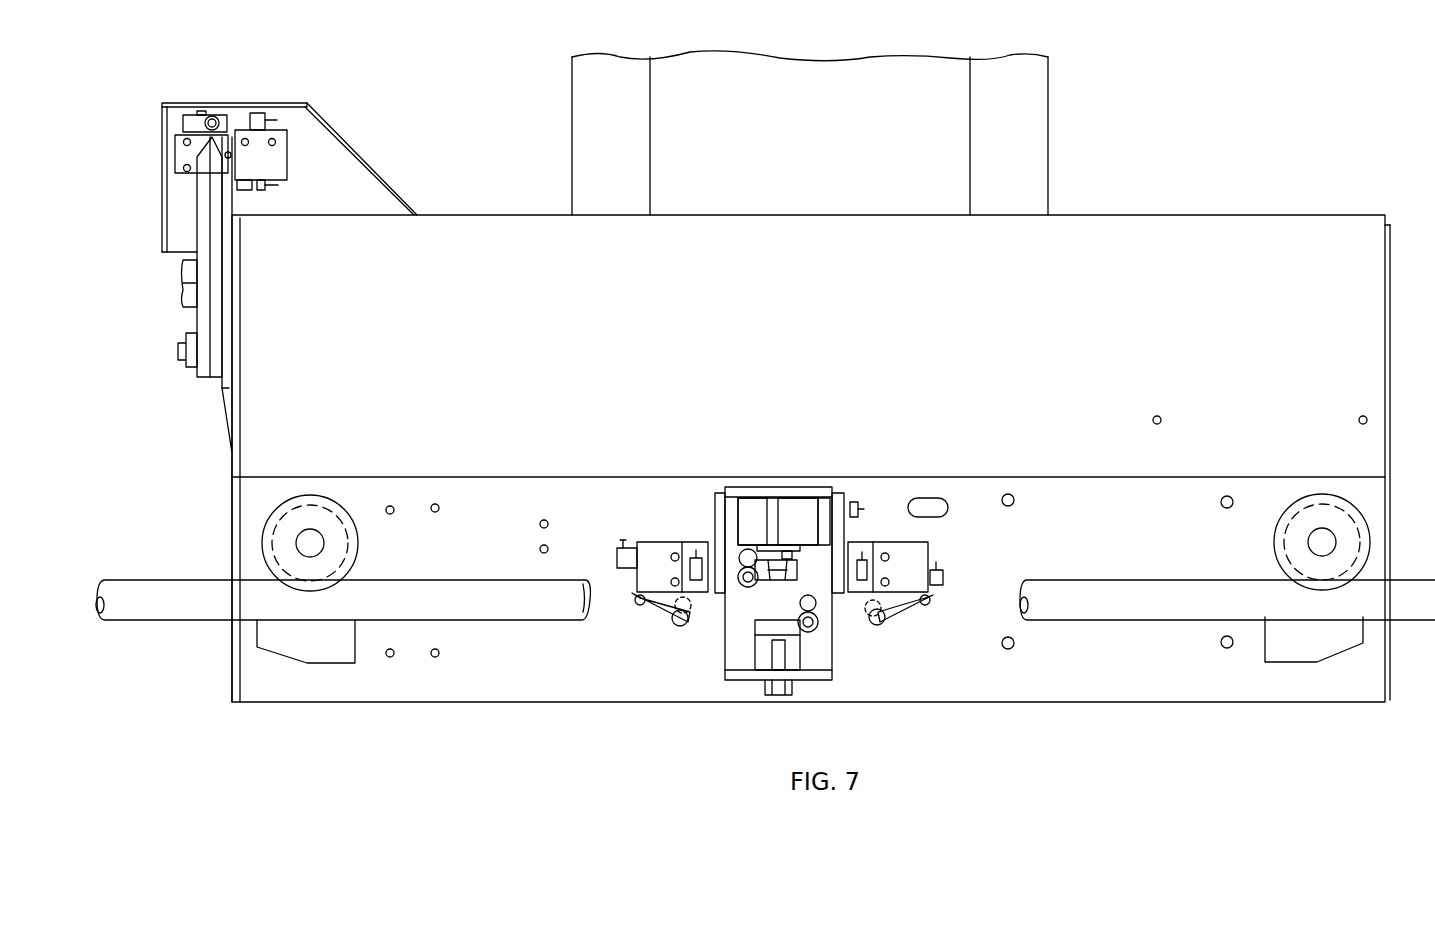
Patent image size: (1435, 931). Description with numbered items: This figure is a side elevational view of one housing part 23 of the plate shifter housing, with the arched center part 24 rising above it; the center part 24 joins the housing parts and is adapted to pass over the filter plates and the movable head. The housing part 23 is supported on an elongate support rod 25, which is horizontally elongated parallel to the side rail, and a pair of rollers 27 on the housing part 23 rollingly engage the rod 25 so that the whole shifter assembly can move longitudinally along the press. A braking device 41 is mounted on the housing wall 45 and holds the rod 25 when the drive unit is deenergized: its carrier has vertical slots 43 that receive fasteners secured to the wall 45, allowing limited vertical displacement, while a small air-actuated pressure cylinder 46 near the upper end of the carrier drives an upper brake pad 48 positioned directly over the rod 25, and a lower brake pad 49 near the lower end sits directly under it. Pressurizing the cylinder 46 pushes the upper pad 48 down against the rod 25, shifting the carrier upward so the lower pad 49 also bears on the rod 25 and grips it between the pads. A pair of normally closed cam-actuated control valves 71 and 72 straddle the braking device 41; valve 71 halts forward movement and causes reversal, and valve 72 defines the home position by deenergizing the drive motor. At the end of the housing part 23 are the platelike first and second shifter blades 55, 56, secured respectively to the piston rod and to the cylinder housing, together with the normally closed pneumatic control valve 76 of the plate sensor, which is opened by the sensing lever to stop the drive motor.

The housing part 23 is at (1288, 211).
The arched center part 24 is at (1008, 152).
The support rod 25 is at (1155, 613).
The roller 27 is at (335, 548).
The braking device 41 is at (790, 488).
The vertical slot 43 is at (747, 588).
The housing wall 45 is at (1135, 553).
The pressure cylinder 46 is at (750, 510).
The upper brake pad 48 is at (797, 573).
The lower brake pad 49 is at (767, 630).
The first shifter blade 55 is at (202, 197).
The second shifter blade 56 is at (217, 223).
The control valve 71 is at (902, 555).
The control valve 72 is at (658, 548).
The pneumatic control valve 76 is at (267, 170).